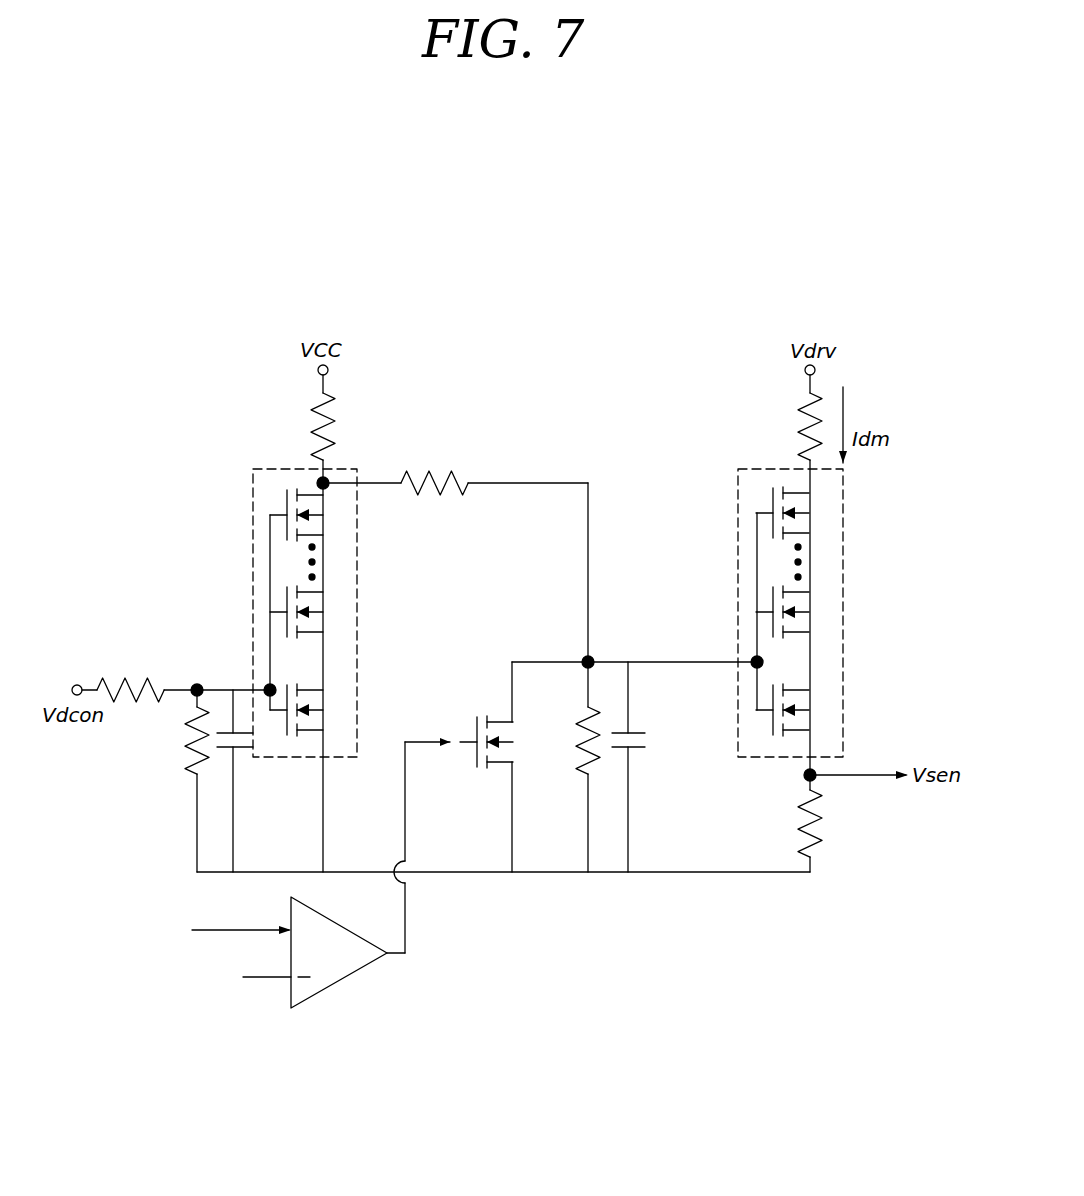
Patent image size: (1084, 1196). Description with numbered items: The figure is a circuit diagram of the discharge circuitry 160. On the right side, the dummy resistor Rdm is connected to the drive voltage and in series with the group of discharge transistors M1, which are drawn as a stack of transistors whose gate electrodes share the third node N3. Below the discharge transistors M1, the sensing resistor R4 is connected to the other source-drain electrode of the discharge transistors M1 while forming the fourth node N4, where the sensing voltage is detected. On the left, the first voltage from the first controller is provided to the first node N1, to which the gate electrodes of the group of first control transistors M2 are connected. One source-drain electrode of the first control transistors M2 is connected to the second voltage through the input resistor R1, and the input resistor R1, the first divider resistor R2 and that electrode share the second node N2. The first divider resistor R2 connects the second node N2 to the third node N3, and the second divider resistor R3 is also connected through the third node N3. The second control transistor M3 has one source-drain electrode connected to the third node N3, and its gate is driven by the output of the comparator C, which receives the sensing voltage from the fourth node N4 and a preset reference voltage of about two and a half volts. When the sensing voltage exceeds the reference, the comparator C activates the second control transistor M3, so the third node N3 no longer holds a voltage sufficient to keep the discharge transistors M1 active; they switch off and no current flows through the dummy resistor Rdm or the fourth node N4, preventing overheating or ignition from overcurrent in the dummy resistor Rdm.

The discharge circuitry 160 is at (779, 310).
The group of discharge transistors M1 is at (843, 612).
The group of first control transistors M2 is at (357, 612).
The second control transistor M3 is at (478, 777).
The input resistor R1 is at (307, 417).
The first divider resistor R2 is at (434, 469).
The second divider resistor R3 is at (571, 740).
The sensing resistor R4 is at (793, 823).
The dummy resistor Rdm is at (781, 426).
The first node N1 is at (197, 690).
The second node N2 is at (323, 482).
The third node N3 is at (588, 662).
The fourth node N4 is at (807, 776).
The comparator C is at (340, 984).